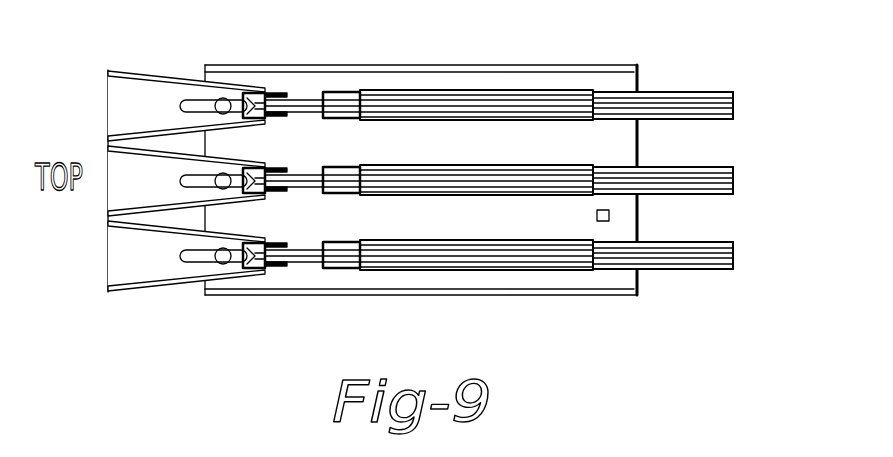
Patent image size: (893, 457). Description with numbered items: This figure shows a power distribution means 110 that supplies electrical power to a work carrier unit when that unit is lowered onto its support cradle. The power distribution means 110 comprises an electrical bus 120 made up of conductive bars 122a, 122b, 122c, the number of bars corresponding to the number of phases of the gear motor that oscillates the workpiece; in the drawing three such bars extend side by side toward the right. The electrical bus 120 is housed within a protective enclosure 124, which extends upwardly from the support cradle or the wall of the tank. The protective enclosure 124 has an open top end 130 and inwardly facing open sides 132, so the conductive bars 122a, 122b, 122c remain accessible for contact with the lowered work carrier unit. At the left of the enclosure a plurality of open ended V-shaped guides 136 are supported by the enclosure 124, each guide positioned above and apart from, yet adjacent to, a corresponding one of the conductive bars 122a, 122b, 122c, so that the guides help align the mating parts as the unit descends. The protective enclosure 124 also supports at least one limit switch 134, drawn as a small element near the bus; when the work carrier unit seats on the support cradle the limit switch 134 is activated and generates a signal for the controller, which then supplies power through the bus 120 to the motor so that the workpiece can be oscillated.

The power distribution means 110 is at (202, 353).
The electrical bus 120 is at (722, 208).
The conductive bar 122a is at (735, 257).
The conductive bar 122b is at (735, 178).
The conductive bar 122c is at (733, 103).
The protective enclosure 124 is at (525, 78).
The open top end 130 is at (205, 76).
The inwardly facing open sides 132 is at (265, 67).
The limit switch 134 is at (609, 218).
The open ended V-shaped guide 136 is at (139, 267).